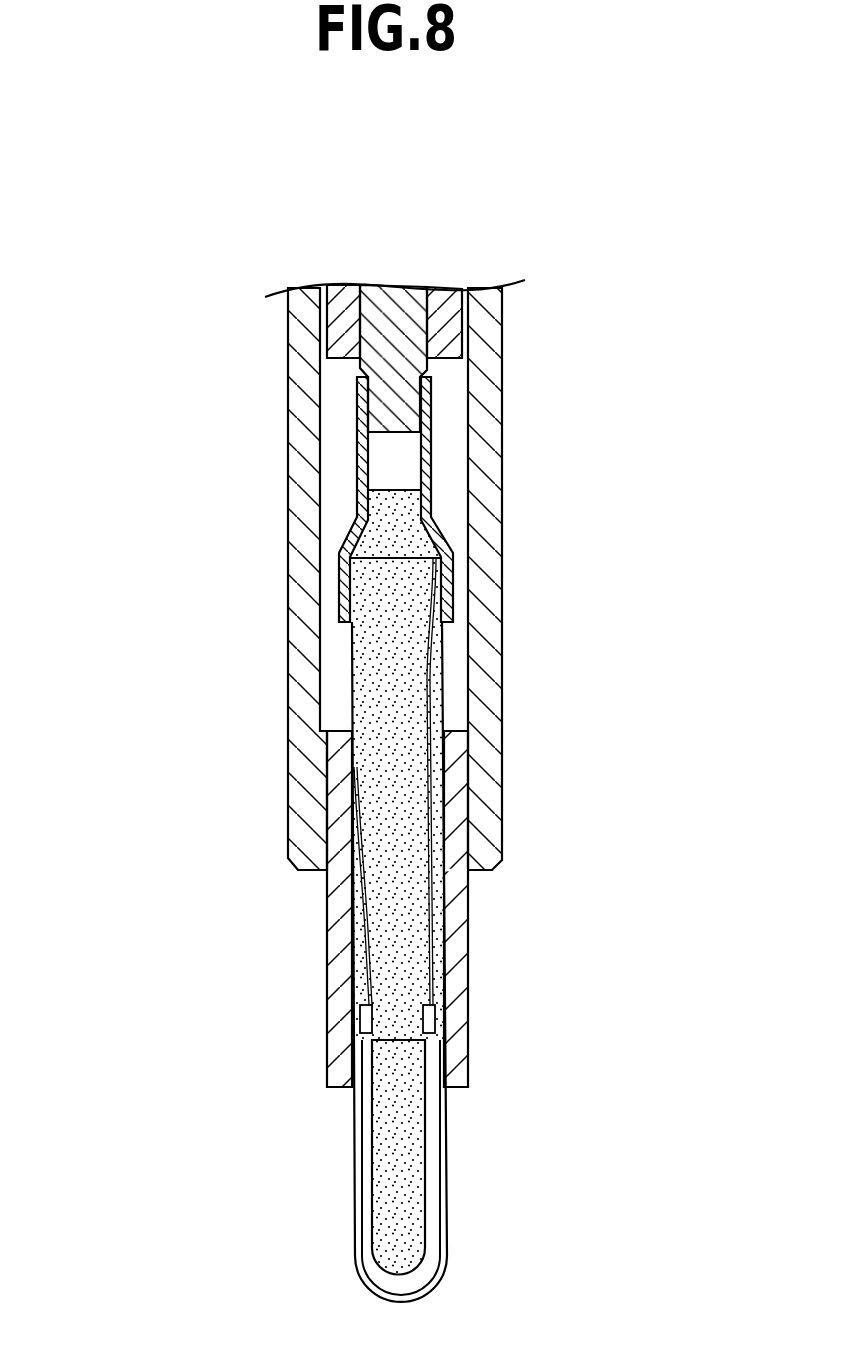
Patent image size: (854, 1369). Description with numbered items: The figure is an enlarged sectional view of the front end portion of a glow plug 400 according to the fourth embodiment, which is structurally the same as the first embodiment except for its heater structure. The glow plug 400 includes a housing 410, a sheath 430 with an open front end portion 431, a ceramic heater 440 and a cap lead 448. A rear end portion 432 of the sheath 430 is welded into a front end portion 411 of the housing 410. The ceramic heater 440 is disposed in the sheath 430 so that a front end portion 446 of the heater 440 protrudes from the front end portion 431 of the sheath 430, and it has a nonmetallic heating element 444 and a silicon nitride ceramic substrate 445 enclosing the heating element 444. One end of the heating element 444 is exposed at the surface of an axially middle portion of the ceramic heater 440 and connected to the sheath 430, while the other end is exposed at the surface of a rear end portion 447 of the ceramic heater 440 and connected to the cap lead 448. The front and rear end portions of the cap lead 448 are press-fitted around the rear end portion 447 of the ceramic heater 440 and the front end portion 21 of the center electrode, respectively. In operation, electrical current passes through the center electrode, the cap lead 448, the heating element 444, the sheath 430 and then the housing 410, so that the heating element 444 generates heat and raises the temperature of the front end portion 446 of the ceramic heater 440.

The glow plug 400 is at (198, 243).
The front end portion of the center electrode 21 is at (398, 318).
The housing 410 is at (287, 462).
The front end portion of the housing 411 is at (303, 572).
The cap lead 448 is at (433, 470).
The rear end portion of the ceramic heater 447 is at (420, 580).
The sheath 430 is at (467, 944).
The rear end portion of the sheath 432 is at (455, 791).
The front end portion of the sheath 431 is at (453, 1068).
The ceramic heater 440 is at (630, 1157).
The silicon nitride ceramic substrate 445 is at (447, 1163).
The nonmetallic heating element 444 is at (432, 1217).
The front end portion of the ceramic heater 446 is at (370, 1288).